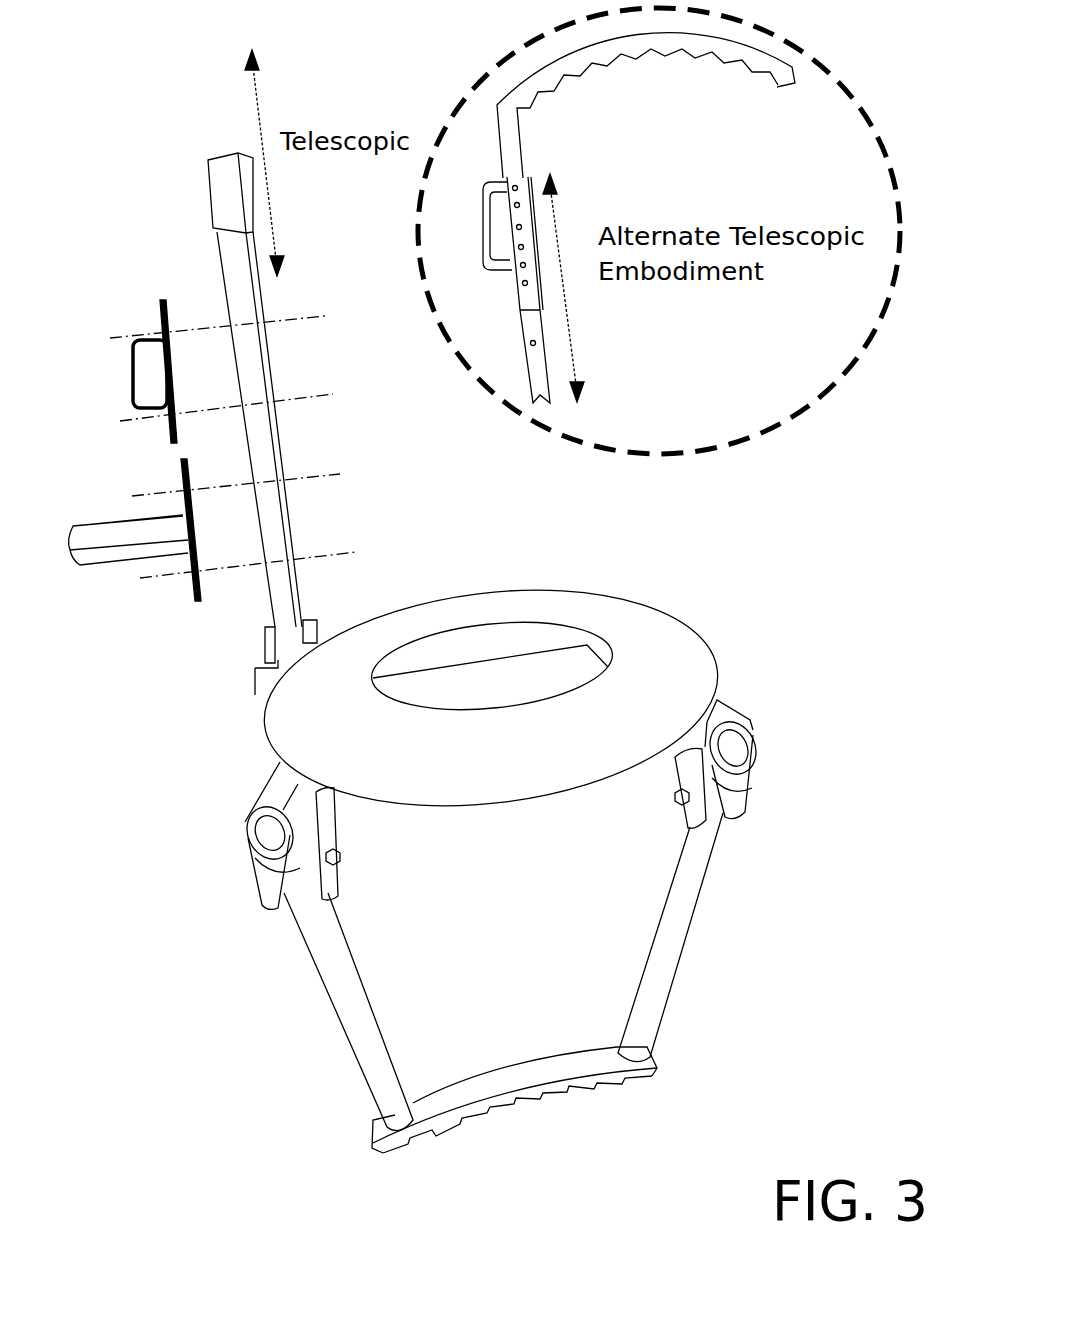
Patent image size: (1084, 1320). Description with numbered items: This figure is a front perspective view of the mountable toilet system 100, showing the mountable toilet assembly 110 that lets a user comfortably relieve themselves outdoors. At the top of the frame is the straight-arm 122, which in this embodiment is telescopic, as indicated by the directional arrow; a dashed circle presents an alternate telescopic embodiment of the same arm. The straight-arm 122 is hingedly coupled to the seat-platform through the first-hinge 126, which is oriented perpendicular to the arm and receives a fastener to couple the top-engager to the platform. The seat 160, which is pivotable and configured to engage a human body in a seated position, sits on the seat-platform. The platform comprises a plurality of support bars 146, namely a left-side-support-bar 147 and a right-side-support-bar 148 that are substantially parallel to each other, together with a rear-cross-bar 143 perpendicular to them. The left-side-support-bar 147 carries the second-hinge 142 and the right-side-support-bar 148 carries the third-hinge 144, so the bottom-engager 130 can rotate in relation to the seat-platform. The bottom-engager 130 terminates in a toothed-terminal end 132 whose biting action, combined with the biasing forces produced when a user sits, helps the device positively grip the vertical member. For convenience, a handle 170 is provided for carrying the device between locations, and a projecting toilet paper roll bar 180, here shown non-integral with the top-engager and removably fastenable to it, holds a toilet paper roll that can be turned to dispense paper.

The mountable toilet system 100 is at (492, 850).
The mountable toilet assembly 110 is at (657, 551).
The straight-arm 122 is at (283, 462).
The first-hinge 126 is at (264, 645).
The bottom-engager 130 is at (348, 1032).
The toothed-terminal end 132 is at (475, 1116).
The second-hinge 142 is at (340, 878).
The rear-cross-bar 143 is at (482, 645).
The third-hinge 144 is at (674, 818).
The support bars 146 is at (269, 770).
The left-side-support-bar 147 is at (259, 791).
The right-side-support-bar 148 is at (723, 703).
The seat 160 is at (674, 633).
The handle 170 is at (125, 365).
The projecting toilet paper roll bar 180 is at (115, 556).